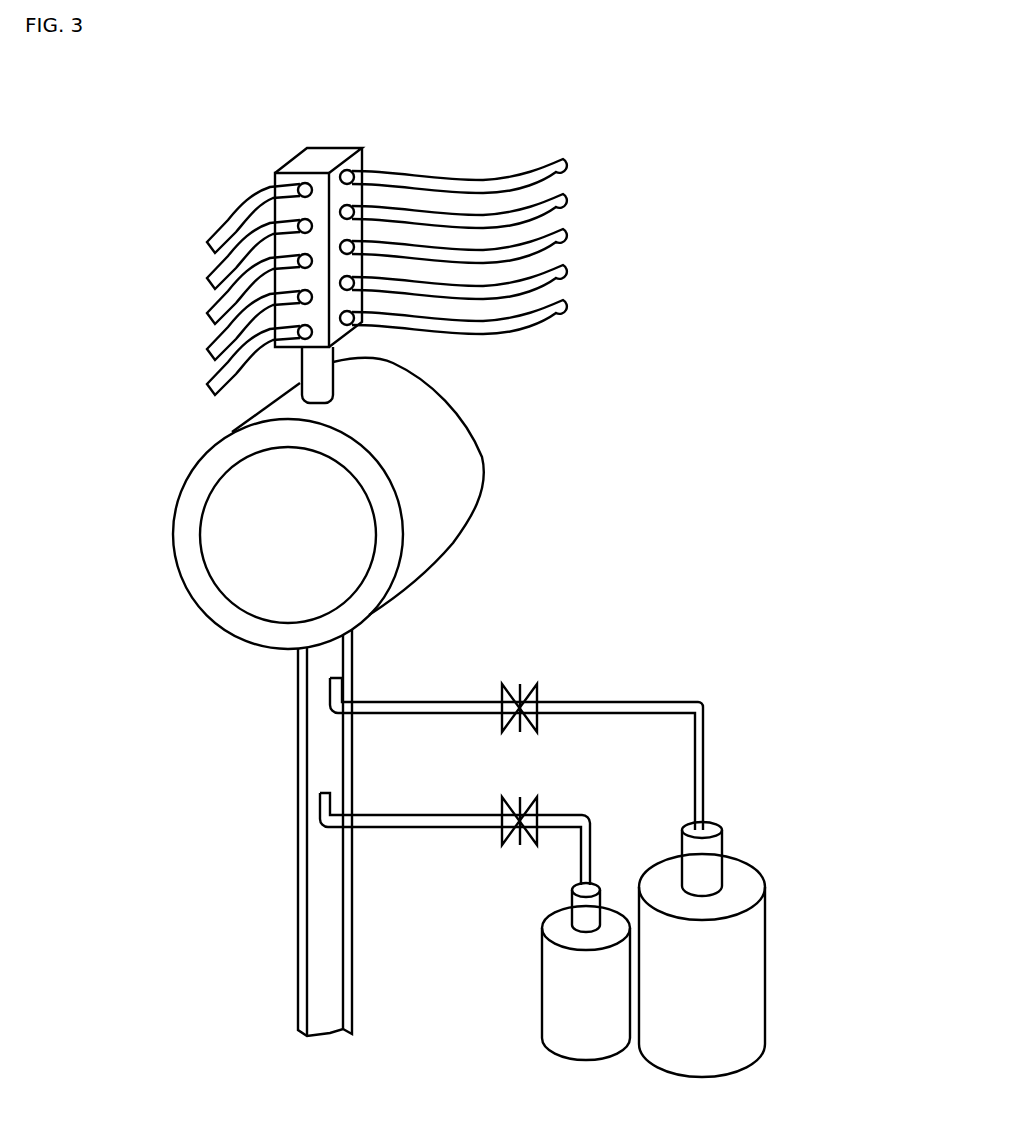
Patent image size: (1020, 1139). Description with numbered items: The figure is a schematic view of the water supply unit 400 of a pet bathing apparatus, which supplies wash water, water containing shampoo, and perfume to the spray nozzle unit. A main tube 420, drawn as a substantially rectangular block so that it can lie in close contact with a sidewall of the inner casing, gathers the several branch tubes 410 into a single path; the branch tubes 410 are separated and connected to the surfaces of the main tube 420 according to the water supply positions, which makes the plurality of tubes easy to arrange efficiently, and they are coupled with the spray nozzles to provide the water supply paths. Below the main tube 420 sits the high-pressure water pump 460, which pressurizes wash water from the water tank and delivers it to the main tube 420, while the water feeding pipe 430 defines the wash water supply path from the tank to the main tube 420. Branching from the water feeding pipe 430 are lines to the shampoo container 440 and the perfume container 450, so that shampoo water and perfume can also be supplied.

The water supply unit 400 is at (785, 240).
The branch tubes 410 is at (220, 305).
The main tube 420 is at (318, 162).
The water feeding pipe 430 is at (305, 388).
The shampoo container 440 is at (723, 952).
The perfume container 450 is at (593, 1017).
The high-pressure water pump 460 is at (263, 507).